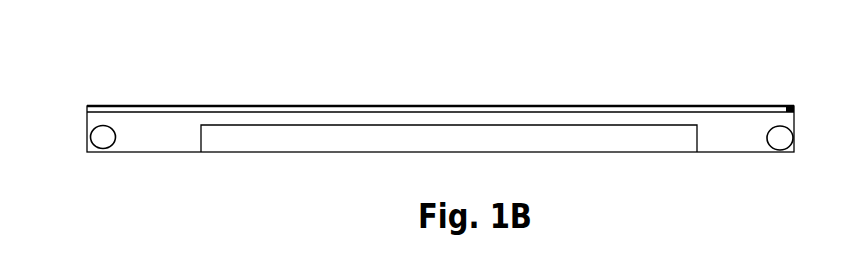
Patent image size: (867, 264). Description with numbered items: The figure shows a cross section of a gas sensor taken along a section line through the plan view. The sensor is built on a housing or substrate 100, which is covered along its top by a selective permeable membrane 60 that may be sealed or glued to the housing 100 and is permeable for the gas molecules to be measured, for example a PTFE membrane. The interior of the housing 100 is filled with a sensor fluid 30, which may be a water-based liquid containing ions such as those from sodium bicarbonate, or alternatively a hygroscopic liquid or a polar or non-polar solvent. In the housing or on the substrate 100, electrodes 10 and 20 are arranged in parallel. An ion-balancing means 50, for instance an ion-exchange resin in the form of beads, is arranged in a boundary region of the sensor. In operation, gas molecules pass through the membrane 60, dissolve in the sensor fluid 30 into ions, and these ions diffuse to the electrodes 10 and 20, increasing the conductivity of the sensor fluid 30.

The electrode 10 is at (449, 97).
The electrode 20 is at (520, 137).
The sensor fluid 30 is at (716, 137).
The ion-balancing means 50 is at (107, 138).
The selective permeable membrane 60 is at (306, 105).
The housing or substrate 100 is at (153, 152).